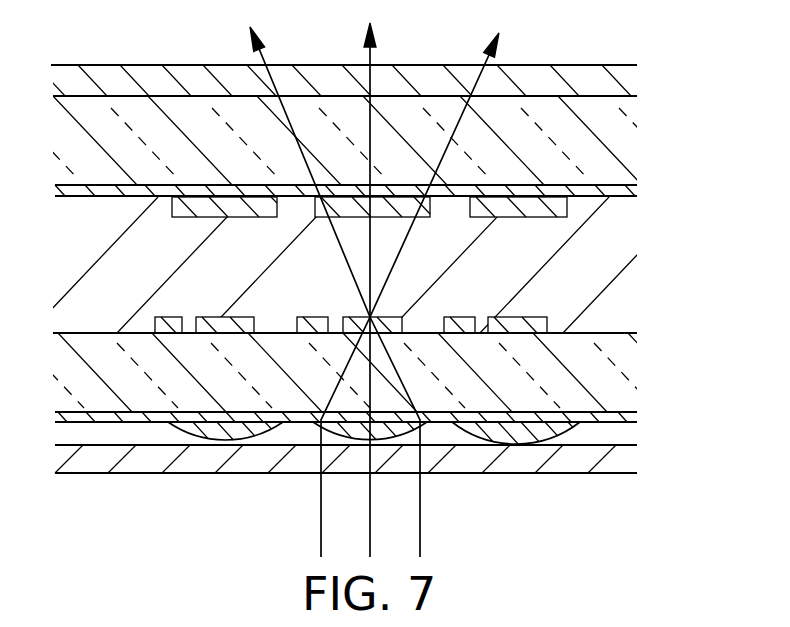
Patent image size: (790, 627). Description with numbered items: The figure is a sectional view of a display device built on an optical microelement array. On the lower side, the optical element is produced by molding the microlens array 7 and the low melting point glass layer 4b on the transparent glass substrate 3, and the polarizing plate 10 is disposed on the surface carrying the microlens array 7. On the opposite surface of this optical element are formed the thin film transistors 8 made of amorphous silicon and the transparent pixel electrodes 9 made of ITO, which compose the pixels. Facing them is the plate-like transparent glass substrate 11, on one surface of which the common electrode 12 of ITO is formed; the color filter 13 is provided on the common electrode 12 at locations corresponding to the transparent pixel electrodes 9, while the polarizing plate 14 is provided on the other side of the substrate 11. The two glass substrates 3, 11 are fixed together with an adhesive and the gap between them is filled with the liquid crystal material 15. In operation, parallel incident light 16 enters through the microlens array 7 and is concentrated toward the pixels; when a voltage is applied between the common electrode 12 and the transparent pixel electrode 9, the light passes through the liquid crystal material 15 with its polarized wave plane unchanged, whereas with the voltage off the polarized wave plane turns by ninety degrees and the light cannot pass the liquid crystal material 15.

The polarizing plate 14 is at (620, 83).
The transparent glass substrate 11 is at (622, 135).
The common electrode 12 is at (620, 192).
The color filter 13 is at (568, 208).
The liquid crystal material 15 is at (595, 270).
The transparent pixel electrode 9 is at (550, 323).
The thin film transistor 8 is at (452, 337).
The transparent glass substrate 3 is at (605, 400).
The low melting point glass layer 4b is at (623, 417).
The microlens array 7 is at (540, 442).
The polarizing plate 10 is at (628, 462).
The incident light 16 is at (371, 517).